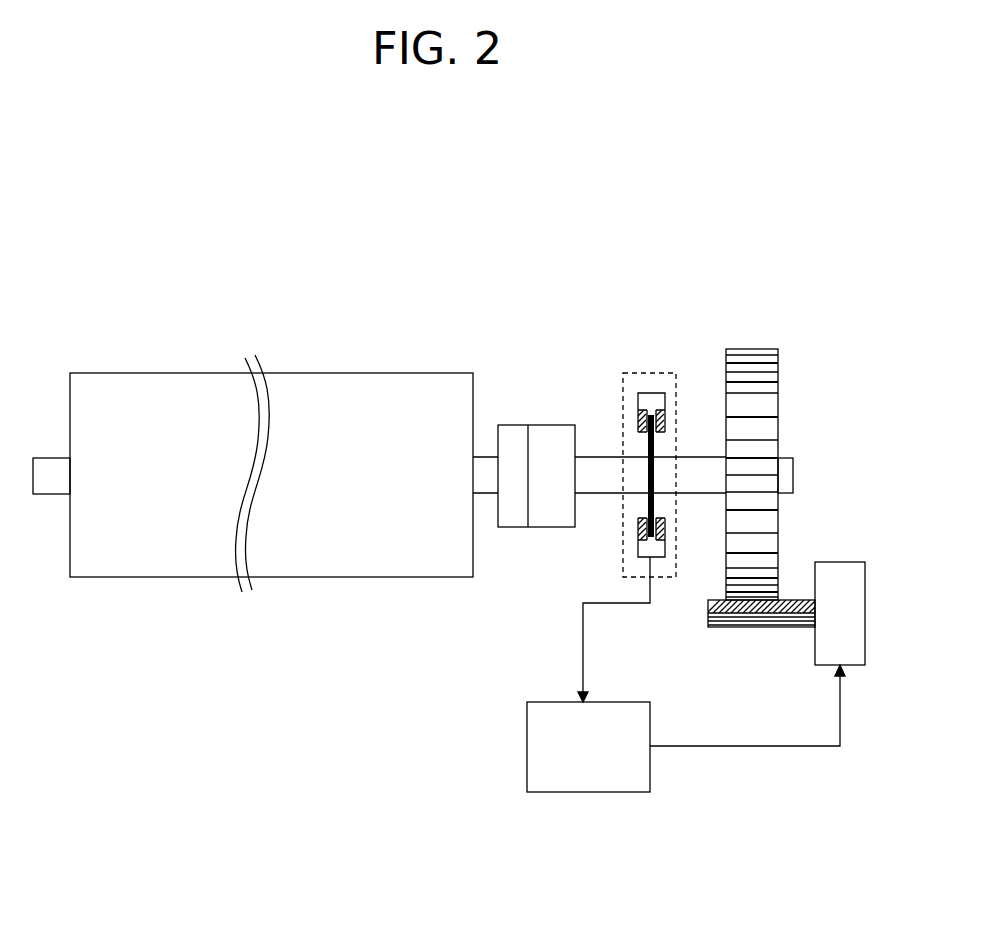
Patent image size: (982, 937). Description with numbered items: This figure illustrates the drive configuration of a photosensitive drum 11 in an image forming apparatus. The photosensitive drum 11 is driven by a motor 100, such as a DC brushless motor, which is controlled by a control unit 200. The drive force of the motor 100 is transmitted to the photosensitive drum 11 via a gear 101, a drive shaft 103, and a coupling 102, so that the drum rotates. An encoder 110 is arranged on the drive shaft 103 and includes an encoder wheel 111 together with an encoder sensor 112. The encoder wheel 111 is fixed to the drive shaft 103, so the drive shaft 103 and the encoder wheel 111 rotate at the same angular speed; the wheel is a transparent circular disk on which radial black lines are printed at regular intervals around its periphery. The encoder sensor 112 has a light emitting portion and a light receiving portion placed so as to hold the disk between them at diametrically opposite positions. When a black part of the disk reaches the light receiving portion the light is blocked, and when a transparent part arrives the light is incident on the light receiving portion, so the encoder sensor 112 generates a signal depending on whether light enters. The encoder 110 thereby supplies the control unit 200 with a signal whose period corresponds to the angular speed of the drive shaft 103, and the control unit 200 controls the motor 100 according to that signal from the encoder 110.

The photosensitive drum 11 is at (313, 372).
The motor 100 is at (838, 562).
The gear 101 is at (752, 349).
The coupling 102 is at (535, 425).
The drive shaft 103 is at (793, 462).
The encoder 110 is at (648, 372).
The encoder wheel 111 is at (647, 507).
The encoder sensor 112 is at (658, 560).
The control unit 200 is at (527, 750).